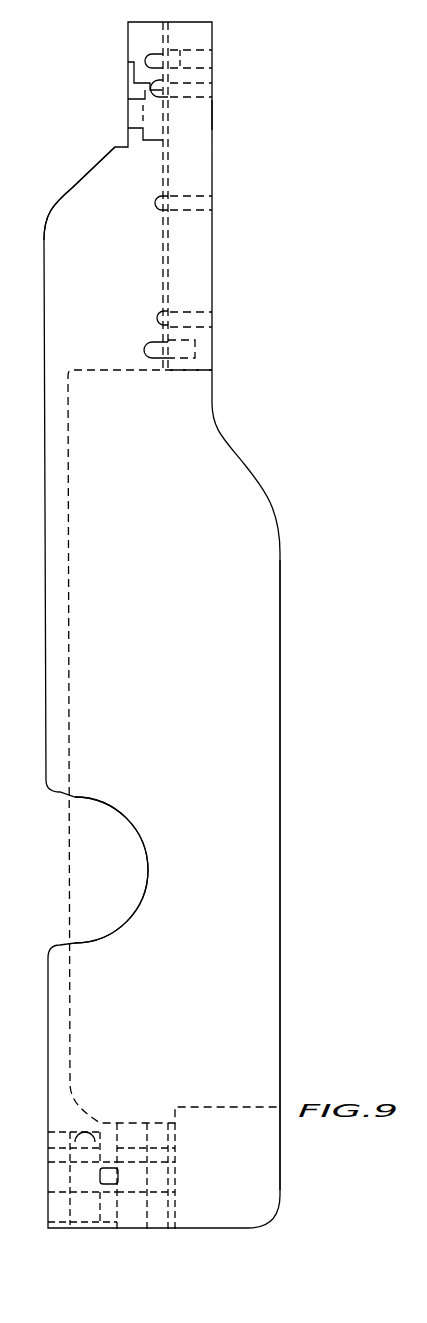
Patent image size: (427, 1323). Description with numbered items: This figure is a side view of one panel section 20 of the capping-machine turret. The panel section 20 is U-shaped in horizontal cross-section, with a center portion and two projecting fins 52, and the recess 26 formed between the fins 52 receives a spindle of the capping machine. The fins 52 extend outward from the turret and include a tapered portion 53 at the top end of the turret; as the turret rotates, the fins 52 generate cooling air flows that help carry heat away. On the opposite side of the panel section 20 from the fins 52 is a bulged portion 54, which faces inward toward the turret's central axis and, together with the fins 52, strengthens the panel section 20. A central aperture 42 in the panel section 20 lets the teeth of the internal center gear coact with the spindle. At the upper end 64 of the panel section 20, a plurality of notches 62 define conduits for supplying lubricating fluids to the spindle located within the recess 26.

The panel section 20 is at (110, 95).
The recess 26 is at (420, 67).
The central aperture 42 is at (117, 818).
The fin 52 is at (103, 180).
The tapered portion 53 is at (70, 185).
The bulged portion 54 is at (280, 655).
The notch 62 is at (213, 203).
The upper end 64 is at (222, 113).